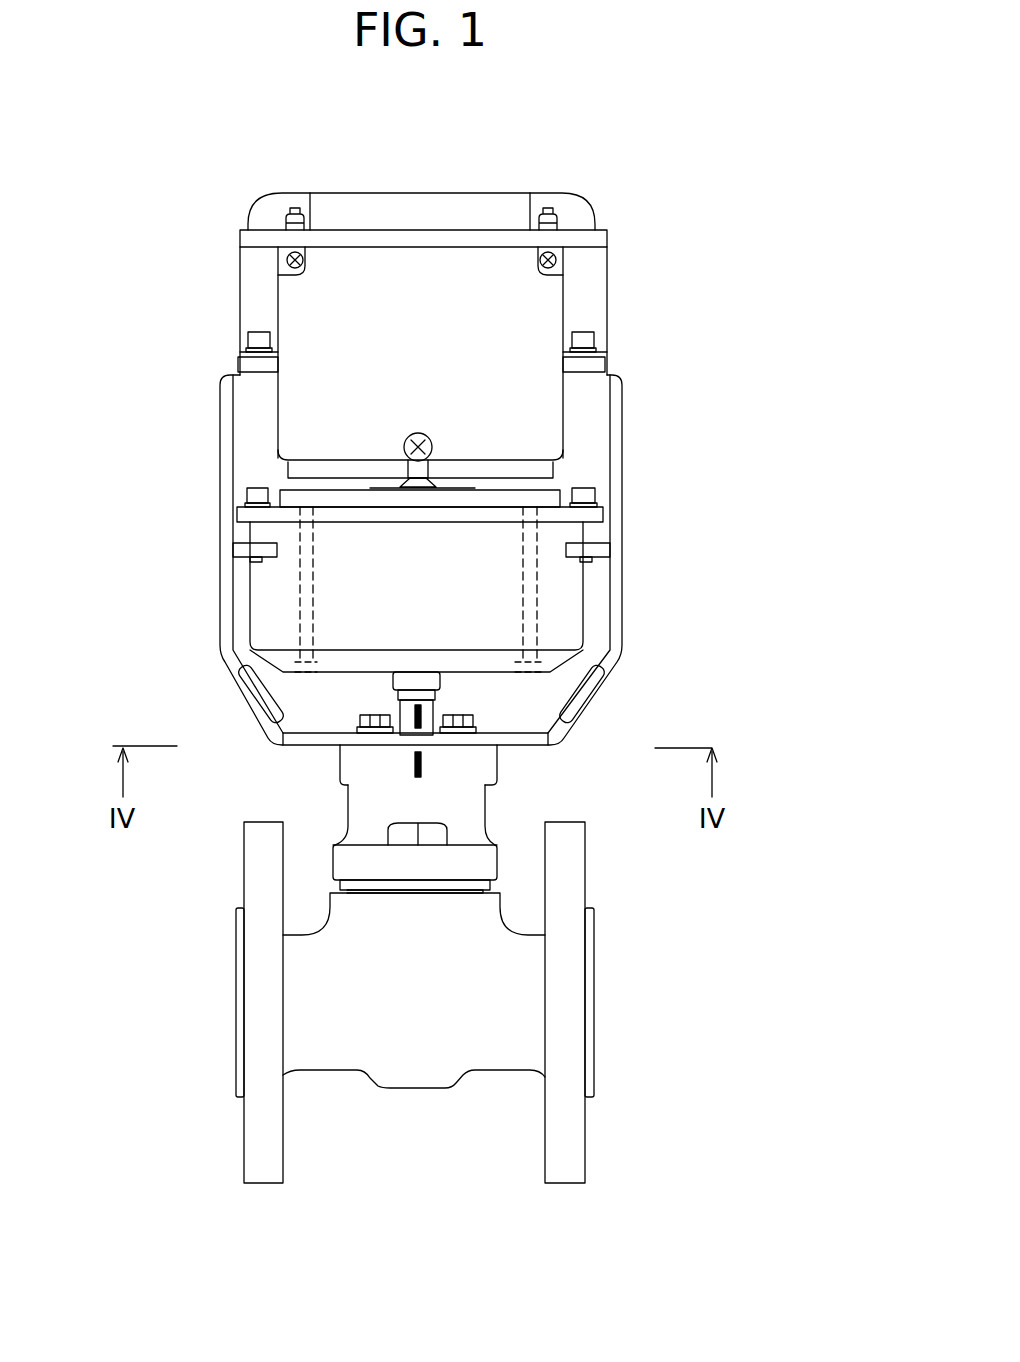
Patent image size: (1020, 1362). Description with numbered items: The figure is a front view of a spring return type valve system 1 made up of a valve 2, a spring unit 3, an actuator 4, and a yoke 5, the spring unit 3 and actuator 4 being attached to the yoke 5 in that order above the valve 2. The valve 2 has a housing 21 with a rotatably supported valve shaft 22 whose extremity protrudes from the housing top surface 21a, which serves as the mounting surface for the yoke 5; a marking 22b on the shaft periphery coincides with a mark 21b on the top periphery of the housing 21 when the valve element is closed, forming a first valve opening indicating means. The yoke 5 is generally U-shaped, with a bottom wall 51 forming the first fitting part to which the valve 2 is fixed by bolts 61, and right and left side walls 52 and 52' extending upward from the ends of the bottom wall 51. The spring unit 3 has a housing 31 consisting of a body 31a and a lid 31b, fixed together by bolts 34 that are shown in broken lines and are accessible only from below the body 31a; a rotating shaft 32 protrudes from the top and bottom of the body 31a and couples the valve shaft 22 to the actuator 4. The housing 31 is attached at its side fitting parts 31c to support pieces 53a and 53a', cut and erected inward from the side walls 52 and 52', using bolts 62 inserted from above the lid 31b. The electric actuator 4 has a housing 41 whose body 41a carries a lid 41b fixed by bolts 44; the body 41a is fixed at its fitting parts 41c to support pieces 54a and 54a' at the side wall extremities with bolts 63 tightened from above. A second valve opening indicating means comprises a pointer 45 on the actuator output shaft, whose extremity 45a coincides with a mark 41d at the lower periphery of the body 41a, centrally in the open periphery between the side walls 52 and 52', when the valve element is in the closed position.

The spring return type valve system 1 is at (796, 330).
The valve 2 is at (237, 940).
The housing 21 is at (410, 1078).
The top surface 21a is at (495, 760).
The mark 21b is at (440, 787).
The valve shaft 22 is at (500, 752).
The marking 22b is at (430, 772).
The spring unit 3 is at (278, 592).
The housing 31 is at (757, 532).
The body 31a is at (622, 612).
The lid 31b is at (622, 578).
The fitting parts 31c is at (248, 524).
The rotating shaft 32 is at (442, 683).
The bolts 34 is at (305, 622).
The actuator 4 is at (240, 265).
The housing 41 is at (735, 158).
The body 41a is at (590, 265).
The lid 41b is at (580, 205).
The fitting parts 41c is at (240, 360).
The mark 41d is at (480, 470).
The bolts 44 is at (294, 208).
The pointer 45 is at (437, 486).
The extremity 45a is at (410, 484).
The yoke 5 is at (220, 418).
The bottom wall 51 is at (320, 750).
The side wall 52 is at (206, 660).
The side wall 52' is at (625, 694).
The support piece 53a is at (207, 542).
The support piece 53a' is at (642, 529).
The support piece 54a is at (201, 375).
The support piece 54a' is at (642, 377).
The bolts 61 is at (305, 742).
The bolts 62 is at (250, 493).
The bolts 63 is at (250, 332).